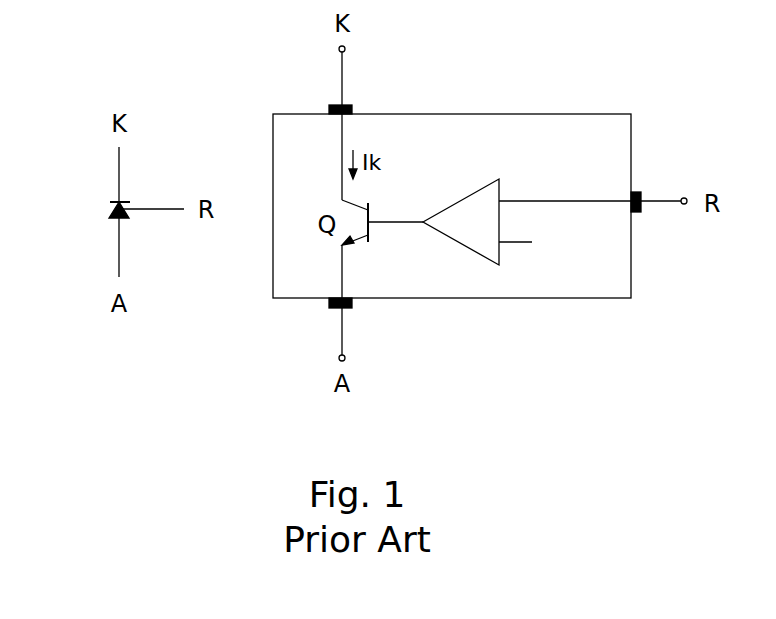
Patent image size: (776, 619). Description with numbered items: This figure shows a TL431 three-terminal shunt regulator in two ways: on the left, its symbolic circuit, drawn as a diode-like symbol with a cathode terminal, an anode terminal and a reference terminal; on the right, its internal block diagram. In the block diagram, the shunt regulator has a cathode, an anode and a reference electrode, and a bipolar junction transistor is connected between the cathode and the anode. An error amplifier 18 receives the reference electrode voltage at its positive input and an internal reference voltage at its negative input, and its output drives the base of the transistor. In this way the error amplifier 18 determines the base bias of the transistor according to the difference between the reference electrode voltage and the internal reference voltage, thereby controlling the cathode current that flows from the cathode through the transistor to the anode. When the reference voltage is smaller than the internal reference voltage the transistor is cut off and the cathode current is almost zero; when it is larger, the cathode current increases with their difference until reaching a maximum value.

The error amplifier 18 is at (463, 198).